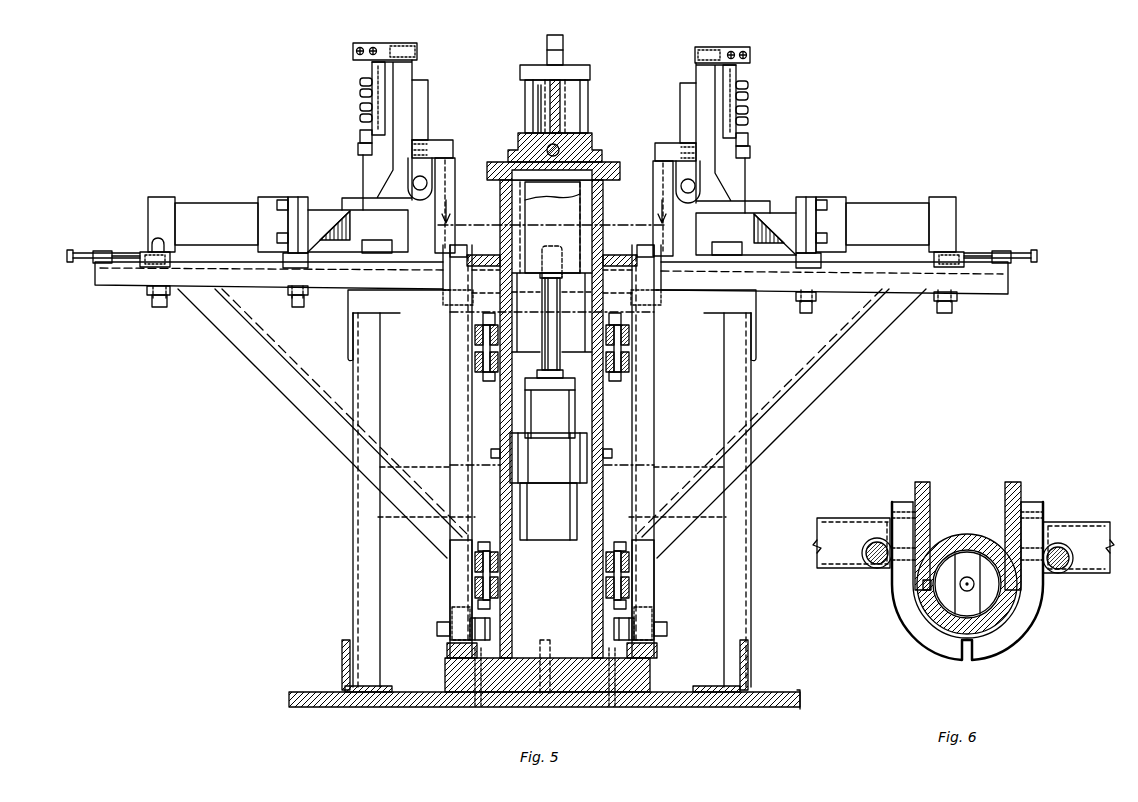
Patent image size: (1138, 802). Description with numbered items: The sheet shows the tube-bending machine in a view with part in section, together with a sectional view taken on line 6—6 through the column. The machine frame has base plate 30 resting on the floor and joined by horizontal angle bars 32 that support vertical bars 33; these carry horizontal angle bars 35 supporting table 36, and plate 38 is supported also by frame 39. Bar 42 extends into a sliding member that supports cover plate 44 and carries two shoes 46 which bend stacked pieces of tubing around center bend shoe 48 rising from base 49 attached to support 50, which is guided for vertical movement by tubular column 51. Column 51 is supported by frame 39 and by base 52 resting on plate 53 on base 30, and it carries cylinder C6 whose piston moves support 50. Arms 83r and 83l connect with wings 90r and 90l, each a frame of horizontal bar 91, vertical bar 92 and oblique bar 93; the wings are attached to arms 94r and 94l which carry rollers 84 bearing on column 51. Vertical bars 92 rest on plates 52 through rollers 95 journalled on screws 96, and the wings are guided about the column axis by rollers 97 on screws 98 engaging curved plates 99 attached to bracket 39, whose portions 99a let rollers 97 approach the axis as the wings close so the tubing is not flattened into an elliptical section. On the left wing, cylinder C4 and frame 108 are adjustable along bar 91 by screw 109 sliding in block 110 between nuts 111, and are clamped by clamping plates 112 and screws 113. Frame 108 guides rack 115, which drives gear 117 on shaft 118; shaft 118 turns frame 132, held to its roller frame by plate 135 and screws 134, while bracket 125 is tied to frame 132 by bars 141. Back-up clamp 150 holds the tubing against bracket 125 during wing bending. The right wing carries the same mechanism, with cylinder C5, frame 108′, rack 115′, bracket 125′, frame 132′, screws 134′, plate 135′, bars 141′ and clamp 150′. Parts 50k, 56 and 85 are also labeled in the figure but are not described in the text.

In FIG. 5, the section line 6— 6 is at (551, 225).
In FIG. 5, the base plate 30 is at (675, 705).
In FIG. 5, the horizontal angle bars 32 is at (342, 661).
In FIG. 5, the vertical bars 33 is at (380, 392).
In FIG. 5, the horizontal angle bars 35 is at (348, 341).
In FIG. 5, the table 36 is at (348, 300).
In FIG. 5, the plate 38 is at (487, 172).
In FIG. 6, the frame 39 is at (1005, 500).
In FIG. 5, the bar 42 is at (585, 85).
In FIG. 5, the cover plate 44 is at (565, 70).
In FIG. 5, the shoes 46 is at (575, 100).
In FIG. 5, the center bend shoe 48 is at (538, 107).
In FIG. 5, the base 49 is at (580, 133).
In FIG. 5, the support 50 is at (600, 140).
In FIG. 6, the support 50 is at (940, 610).
In FIG. 6, the key 50k is at (925, 592).
In FIG. 5, the tubular column 51 is at (595, 200).
In FIG. 6, the tubular column 51 is at (918, 600).
In FIG. 5, the base 52 is at (657, 650).
In FIG. 5, the plate 53 is at (650, 676).
In FIG. 5, the collar 56 is at (612, 455).
In FIG. 5, the arm 83l is at (475, 340).
In FIG. 5, the arm 83r is at (629, 358).
In FIG. 5, the rollers 84 is at (475, 555).
In FIG. 5, the bearing cap 85 is at (484, 542).
In FIG. 5, the left wing 90l is at (255, 378).
In FIG. 6, the left wing 90l is at (835, 518).
In FIG. 5, the right wing 90r is at (830, 392).
In FIG. 6, the right wing 90r is at (1102, 522).
In FIG. 5, the horizontal bar 91 is at (268, 288).
In FIG. 5, the vertical bar 92 is at (450, 425).
In FIG. 5, the oblique bar 93 is at (222, 334).
In FIG. 5, the arm 94l is at (475, 575).
In FIG. 5, the arm 94r is at (629, 581).
In FIG. 5, the rollers 95 is at (452, 612).
In FIG. 5, the screws 96 is at (437, 630).
In FIG. 5, the rollers 97 is at (445, 292).
In FIG. 6, the rollers 97 is at (870, 565).
In FIG. 5, the screws 98 is at (450, 252).
In FIG. 6, the screws 98 is at (872, 545).
In FIG. 5, the curved plates 99 is at (478, 245).
In FIG. 6, the curved plates 99 is at (1037, 628).
In FIG. 6, the portions of curved plates 99a is at (955, 662).
In FIG. 5, the frame 108 is at (358, 148).
In FIG. 5, the frame 108′ is at (750, 152).
In FIG. 5, the screw 109 is at (145, 250).
In FIG. 5, the block 110 is at (100, 250).
In FIG. 5, the nuts 111 is at (85, 247).
In FIG. 5, the clamping plates 112 is at (147, 290).
In FIG. 5, the screws 113 is at (155, 305).
In FIG. 5, the rack 115 is at (312, 214).
In FIG. 5, the rack 115′ is at (785, 212).
In FIG. 5, the gear 117 is at (345, 240).
In FIG. 5, the shaft 118 is at (368, 253).
In FIG. 5, the bracket 125 is at (360, 136).
In FIG. 5, the bracket 125′ is at (748, 138).
In FIG. 5, the frame 132 is at (363, 172).
In FIG. 5, the frame 132′ is at (745, 177).
In FIG. 5, the screws 134 is at (359, 95).
In FIG. 5, the screws 134′ is at (750, 98).
In FIG. 5, the plate 135 is at (372, 68).
In FIG. 5, the plate 135′ is at (736, 72).
In FIG. 5, the bars 141 is at (384, 43).
In FIG. 5, the bars 141′ is at (726, 47).
In FIG. 5, the wing bend back-up clamp 150 is at (428, 103).
In FIG. 5, the wing bend back-up clamp 150′ is at (680, 100).
In FIG. 5, the left wing bend cylinder C4 is at (240, 200).
In FIG. 5, the right wing bend cylinder C5 is at (910, 190).
In FIG. 5, the cylinder C6 is at (550, 515).